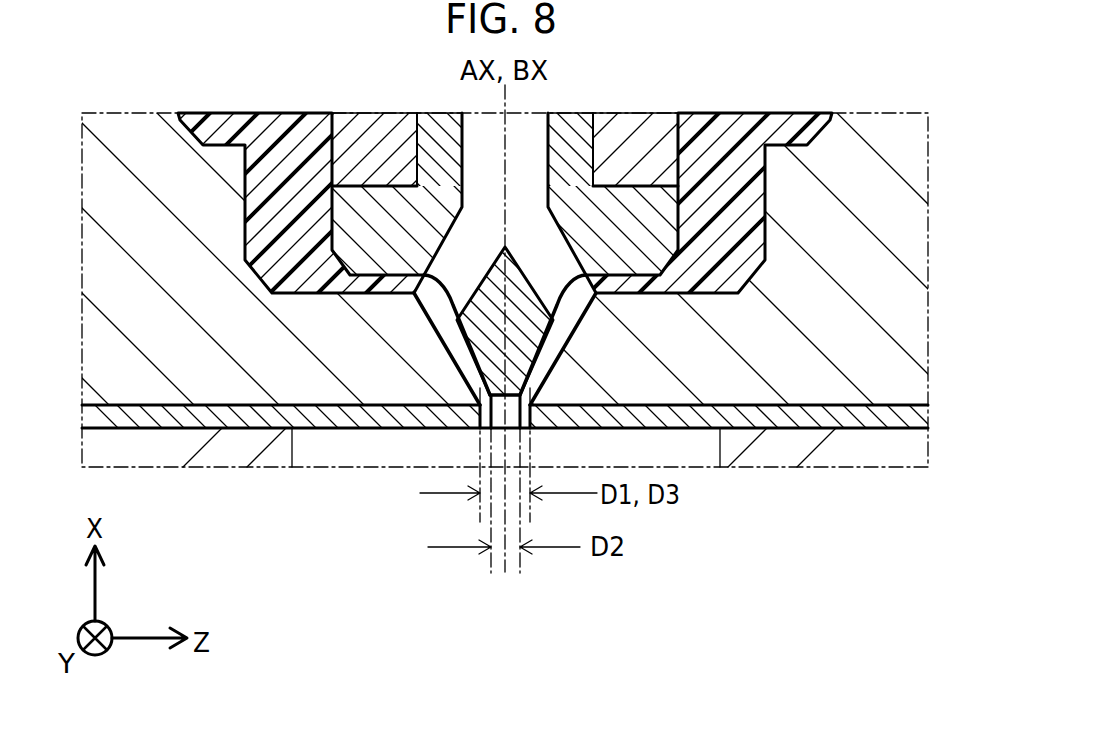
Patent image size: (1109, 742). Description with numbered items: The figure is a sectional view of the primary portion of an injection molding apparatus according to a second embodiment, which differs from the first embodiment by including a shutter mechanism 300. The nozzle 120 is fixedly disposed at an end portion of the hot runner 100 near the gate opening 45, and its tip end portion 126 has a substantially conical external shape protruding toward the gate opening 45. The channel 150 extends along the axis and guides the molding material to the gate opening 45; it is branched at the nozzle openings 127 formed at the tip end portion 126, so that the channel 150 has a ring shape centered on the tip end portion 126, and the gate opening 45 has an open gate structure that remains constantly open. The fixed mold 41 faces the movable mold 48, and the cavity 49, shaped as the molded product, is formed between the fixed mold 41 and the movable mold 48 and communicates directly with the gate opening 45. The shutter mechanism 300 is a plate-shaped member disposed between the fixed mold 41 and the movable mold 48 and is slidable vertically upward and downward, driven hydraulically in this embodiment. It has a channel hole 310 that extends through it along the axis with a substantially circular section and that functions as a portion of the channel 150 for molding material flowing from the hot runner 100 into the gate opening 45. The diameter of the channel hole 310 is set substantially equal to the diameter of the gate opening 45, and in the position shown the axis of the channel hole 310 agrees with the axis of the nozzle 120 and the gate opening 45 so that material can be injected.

The hot runner 100 is at (857, 63).
The fixed mold 41 is at (83, 300).
The nozzle 120 is at (679, 81).
The channel 150 is at (492, 143).
The tip end portion 126 is at (480, 328).
The nozzle opening 127 is at (553, 283).
The channel hole 310 is at (483, 405).
The gate opening 45 is at (483, 430).
The shutter mechanism 300 is at (842, 413).
The movable mold 48 is at (152, 428).
The cavity 49 is at (680, 459).